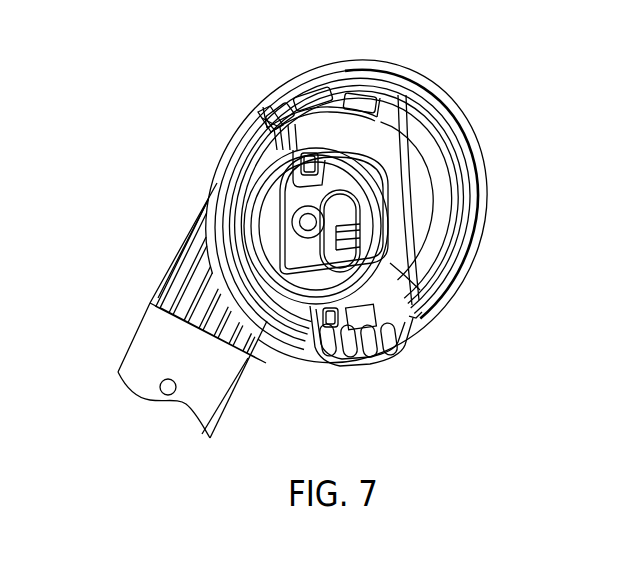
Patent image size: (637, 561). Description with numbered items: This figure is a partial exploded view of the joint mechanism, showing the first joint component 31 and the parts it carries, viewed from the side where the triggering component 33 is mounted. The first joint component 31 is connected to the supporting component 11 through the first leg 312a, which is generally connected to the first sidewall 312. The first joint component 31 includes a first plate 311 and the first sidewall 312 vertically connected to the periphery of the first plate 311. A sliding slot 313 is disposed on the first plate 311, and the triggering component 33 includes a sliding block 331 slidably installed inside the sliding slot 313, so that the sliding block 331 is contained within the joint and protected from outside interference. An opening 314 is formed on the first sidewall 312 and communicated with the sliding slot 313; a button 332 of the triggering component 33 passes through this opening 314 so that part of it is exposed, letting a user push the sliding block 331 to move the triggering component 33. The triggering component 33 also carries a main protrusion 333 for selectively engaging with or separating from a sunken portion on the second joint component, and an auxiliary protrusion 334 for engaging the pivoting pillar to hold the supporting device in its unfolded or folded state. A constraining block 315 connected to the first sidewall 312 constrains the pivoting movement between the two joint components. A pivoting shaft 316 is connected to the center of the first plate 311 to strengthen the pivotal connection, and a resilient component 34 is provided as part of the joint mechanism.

The supporting component 11 is at (137, 401).
The first joint component 31 is at (207, 110).
The triggering component 33 is at (367, 143).
The resilient component 34 is at (337, 233).
The first plate 311 is at (423, 163).
The first sidewall 312 is at (463, 167).
The first leg 312a is at (165, 283).
The sliding slot 313 is at (340, 125).
The opening 314 is at (415, 320).
The constraining block 315 is at (268, 116).
The pivoting shaft 316 is at (330, 205).
The sliding block 331 is at (402, 250).
The button 332 is at (408, 333).
The main protrusion 333 is at (313, 353).
The auxiliary protrusion 334 is at (297, 170).